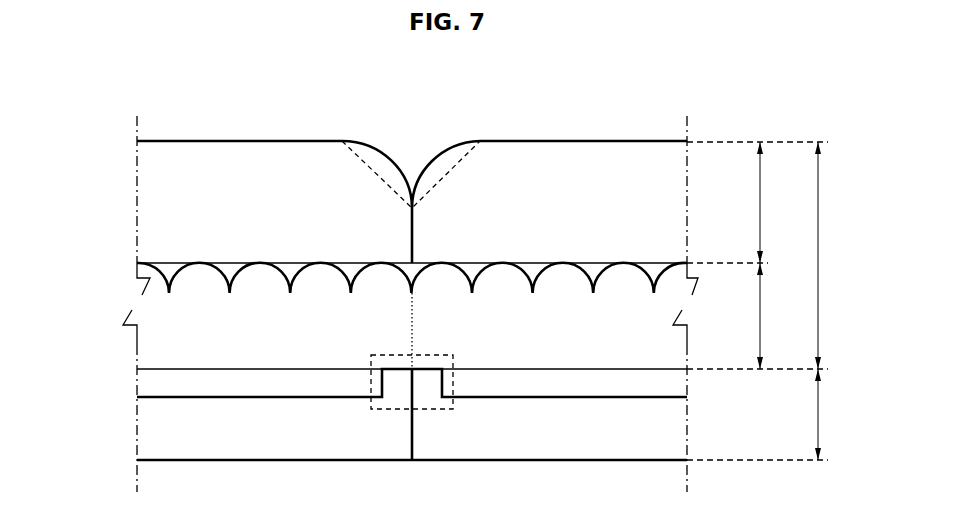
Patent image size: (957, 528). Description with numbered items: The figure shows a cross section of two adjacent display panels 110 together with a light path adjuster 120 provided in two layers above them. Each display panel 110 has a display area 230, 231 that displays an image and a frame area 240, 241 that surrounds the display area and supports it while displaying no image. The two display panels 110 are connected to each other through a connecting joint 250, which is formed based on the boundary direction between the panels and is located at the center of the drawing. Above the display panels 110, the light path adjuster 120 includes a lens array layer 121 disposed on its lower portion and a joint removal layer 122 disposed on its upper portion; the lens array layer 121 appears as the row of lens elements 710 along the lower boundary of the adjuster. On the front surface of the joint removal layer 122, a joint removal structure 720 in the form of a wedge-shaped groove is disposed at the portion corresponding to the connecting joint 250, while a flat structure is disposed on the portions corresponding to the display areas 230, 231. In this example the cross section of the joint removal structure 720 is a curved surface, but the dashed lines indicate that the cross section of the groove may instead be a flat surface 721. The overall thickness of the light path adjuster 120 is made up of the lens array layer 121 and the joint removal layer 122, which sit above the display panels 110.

The display panel 110 is at (839, 414).
The light path adjuster 120 is at (839, 255).
The lens array layer 121 is at (781, 316).
The joint removal layer 122 is at (781, 202).
The display area 230 is at (152, 386).
The display area 231 is at (673, 387).
The frame area 240 is at (152, 437).
The frame area 241 is at (673, 437).
The connecting joint 250 is at (432, 409).
The micro lens pattern 710 is at (200, 273).
The joint removal structure 720 is at (378, 150).
The flat surface 721 is at (468, 157).